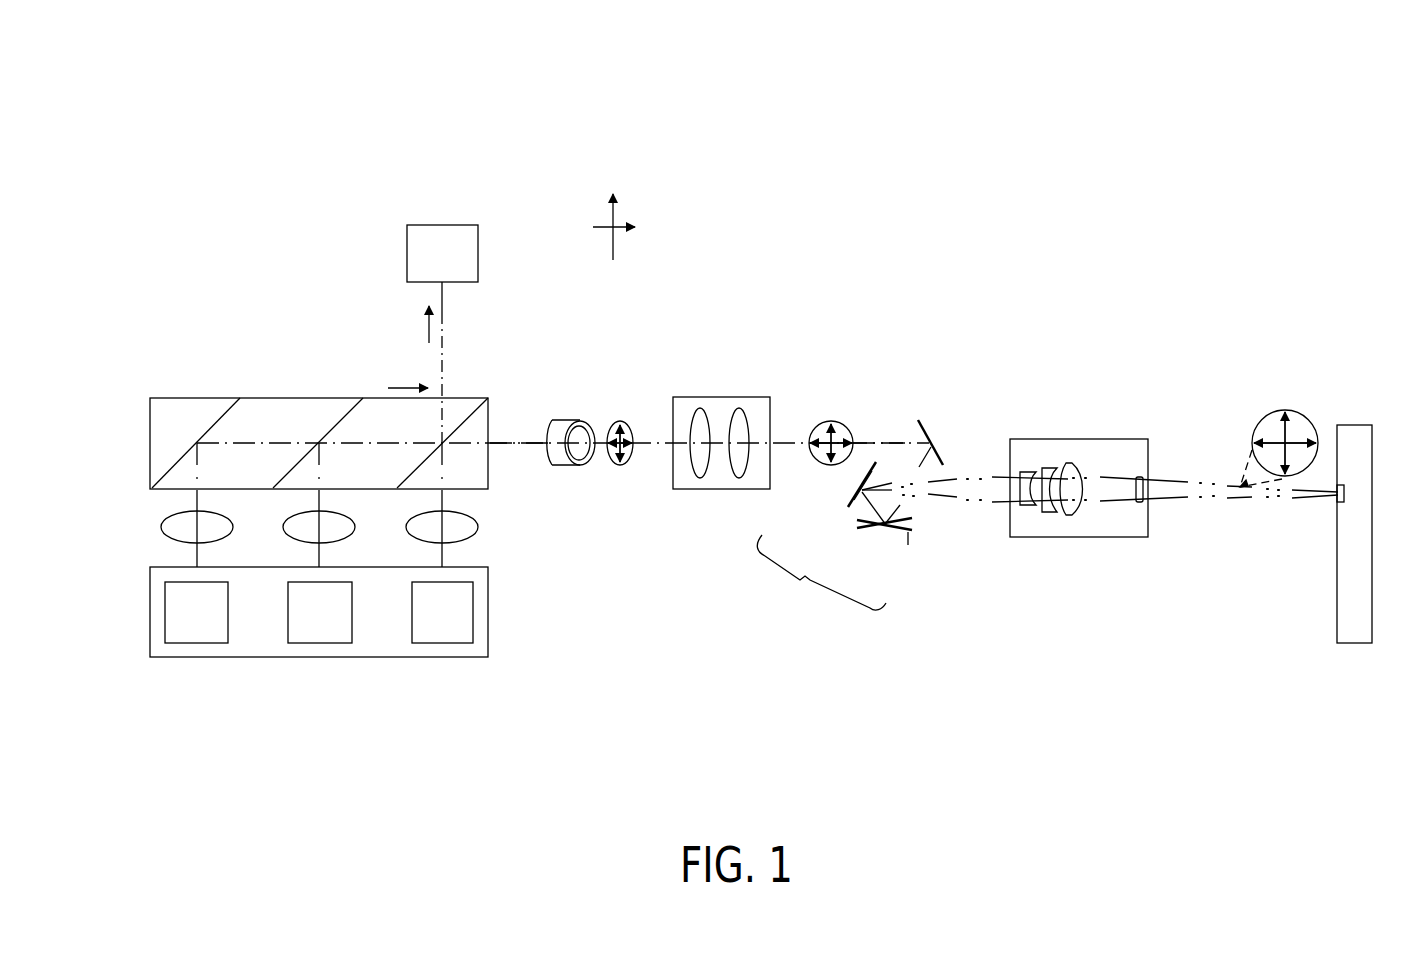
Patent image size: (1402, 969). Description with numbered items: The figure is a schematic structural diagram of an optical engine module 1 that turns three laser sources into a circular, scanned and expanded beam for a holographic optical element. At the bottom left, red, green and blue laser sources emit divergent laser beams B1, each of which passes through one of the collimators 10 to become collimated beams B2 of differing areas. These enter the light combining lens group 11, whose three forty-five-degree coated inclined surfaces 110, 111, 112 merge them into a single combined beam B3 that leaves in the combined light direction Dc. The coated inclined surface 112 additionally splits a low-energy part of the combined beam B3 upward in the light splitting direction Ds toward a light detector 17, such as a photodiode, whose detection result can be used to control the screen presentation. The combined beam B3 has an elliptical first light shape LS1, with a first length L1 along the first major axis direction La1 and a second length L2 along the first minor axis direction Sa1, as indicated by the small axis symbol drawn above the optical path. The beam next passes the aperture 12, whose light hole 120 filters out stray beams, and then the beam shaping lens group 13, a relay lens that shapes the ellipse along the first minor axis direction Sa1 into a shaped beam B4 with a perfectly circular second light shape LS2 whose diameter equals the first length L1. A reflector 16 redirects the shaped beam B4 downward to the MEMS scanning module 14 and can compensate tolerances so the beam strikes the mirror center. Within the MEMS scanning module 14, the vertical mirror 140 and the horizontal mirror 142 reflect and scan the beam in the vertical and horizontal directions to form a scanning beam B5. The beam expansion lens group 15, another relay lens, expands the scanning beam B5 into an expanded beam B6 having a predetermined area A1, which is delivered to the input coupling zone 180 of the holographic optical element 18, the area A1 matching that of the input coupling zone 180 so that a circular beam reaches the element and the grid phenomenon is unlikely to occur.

The optical engine module 1 is at (756, 91).
The collimators 10 is at (480, 528).
The light combining lens group 11 is at (165, 398).
The coated inclined surface 110 is at (230, 398).
The coated inclined surface 111 is at (353, 398).
The coated inclined surface 112 is at (476, 398).
The aperture 12 is at (553, 462).
The light hole 120 is at (572, 427).
The beam shaping lens group 13 is at (722, 397).
The MEMS scanning module 14 is at (821, 576).
The vertical mirror 140 is at (853, 500).
The horizontal mirror 142 is at (908, 535).
The beam expansion lens group 15 is at (1062, 445).
The reflector 16 is at (920, 420).
The light detector 17 is at (442, 225).
The holographic optical element 18 is at (1355, 425).
The input coupling zone 180 is at (1340, 503).
The laser beams B1 is at (195, 560).
The collimated beams B2 is at (190, 516).
The combined beam B3 is at (537, 443).
The shaped beam B4 is at (916, 445).
The scanning beam B5 is at (1000, 503).
The expanded beam B6 is at (1172, 482).
The first length L1 is at (616, 460).
The second length L2 is at (629, 460).
The first light shape LS1 is at (622, 422).
The second light shape LS2 is at (820, 422).
The predetermined area A1 is at (1303, 415).
The light splitting direction Ds is at (410, 327).
The combined light direction Dc is at (405, 373).
The first major axis direction La1 is at (614, 213).
The first minor axis direction Sa1 is at (634, 229).